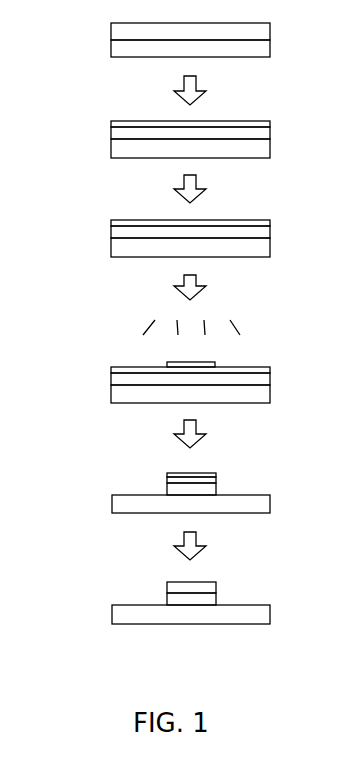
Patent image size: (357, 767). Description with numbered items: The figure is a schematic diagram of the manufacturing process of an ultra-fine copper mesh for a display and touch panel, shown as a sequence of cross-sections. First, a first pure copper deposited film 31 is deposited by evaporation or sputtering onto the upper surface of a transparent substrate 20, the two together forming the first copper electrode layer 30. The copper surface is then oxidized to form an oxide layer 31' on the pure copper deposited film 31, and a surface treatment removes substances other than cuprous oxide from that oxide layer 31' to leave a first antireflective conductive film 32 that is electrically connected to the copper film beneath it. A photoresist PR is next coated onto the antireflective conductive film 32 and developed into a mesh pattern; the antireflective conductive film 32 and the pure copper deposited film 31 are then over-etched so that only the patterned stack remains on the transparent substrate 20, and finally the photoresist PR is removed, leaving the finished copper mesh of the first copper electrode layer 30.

The transparent substrate 20 is at (270, 47).
The first copper electrode layer 30 is at (78, 24).
The first pure copper deposited film 31 is at (211, 309).
The oxide layer 31' is at (212, 117).
The first antireflective conductive film 32 is at (270, 221).
The photoresist PR is at (214, 363).